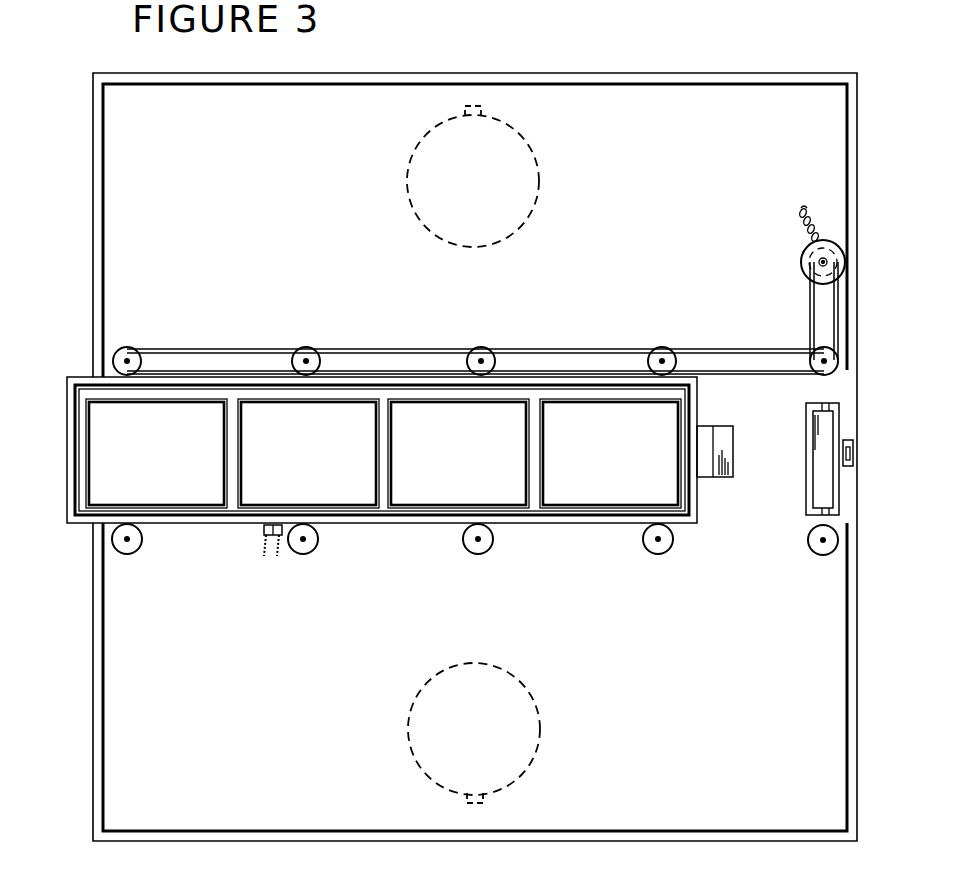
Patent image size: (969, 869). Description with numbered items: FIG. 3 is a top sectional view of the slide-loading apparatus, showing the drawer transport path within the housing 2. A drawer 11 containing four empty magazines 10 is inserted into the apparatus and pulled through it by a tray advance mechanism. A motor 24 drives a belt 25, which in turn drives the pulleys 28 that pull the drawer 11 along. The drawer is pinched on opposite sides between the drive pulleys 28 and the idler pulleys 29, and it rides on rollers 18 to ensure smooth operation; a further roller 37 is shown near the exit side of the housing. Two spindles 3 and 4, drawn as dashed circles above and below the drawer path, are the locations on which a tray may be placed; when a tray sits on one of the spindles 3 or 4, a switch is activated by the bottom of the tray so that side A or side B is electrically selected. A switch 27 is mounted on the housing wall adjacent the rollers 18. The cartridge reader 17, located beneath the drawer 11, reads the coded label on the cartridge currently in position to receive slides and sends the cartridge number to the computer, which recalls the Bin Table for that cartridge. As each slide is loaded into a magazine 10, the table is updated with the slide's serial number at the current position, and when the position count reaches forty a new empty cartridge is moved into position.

The housing 2 is at (93, 130).
The spindle 3 is at (425, 135).
The spindle 4 is at (418, 700).
The magazine 10 is at (80, 412).
The drawer 11 is at (67, 448).
The cartridge reader 17 is at (262, 530).
The rollers 18 is at (820, 480).
The motor 24 is at (802, 258).
The belt 25 is at (716, 348).
The limit switch 27 is at (850, 470).
The pulleys 28 is at (305, 347).
The idler pulleys 29 is at (316, 552).
The roller 37 is at (814, 552).